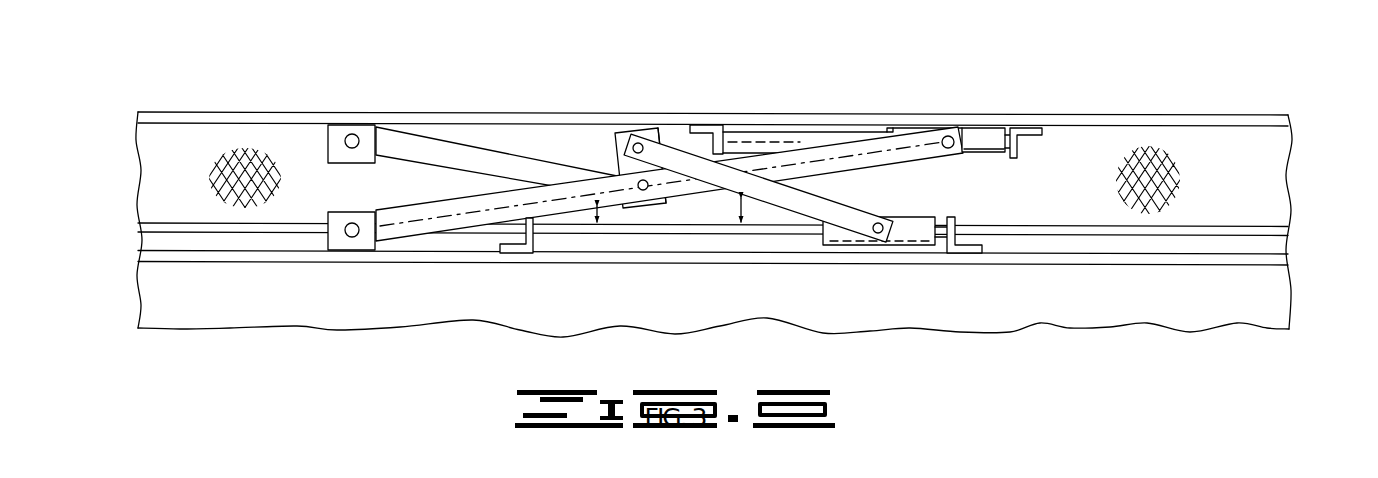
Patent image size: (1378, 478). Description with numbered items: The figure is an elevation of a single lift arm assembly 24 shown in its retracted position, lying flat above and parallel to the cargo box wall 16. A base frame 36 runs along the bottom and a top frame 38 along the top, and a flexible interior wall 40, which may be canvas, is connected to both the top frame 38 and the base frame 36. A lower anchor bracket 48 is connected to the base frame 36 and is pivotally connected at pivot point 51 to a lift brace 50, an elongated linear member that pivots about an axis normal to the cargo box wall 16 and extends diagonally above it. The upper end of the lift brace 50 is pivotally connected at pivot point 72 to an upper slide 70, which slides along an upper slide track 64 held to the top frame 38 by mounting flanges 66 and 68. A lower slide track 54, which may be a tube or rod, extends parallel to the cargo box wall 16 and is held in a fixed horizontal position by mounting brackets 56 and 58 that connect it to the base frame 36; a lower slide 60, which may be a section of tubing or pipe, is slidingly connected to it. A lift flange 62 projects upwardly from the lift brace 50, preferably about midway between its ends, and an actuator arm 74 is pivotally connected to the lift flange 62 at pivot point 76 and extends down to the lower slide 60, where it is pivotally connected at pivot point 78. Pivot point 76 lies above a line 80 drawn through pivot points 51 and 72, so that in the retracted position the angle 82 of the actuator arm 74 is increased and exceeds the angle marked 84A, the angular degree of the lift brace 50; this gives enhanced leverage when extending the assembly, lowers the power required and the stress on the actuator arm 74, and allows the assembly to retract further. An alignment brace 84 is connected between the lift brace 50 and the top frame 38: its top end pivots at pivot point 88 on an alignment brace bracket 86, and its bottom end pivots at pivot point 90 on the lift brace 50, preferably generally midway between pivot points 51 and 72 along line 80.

The cargo box wall 16 is at (1266, 300).
The lift arm assembly 24 is at (432, 298).
The base frame 36 is at (1262, 258).
The top frame 38 is at (207, 113).
The flexible interior wall 40 is at (170, 165).
The lower anchor bracket 48 is at (360, 243).
The lift brace 50 is at (808, 155).
The pivot point 51 is at (348, 232).
The lower slide track 54 is at (620, 235).
The mounting bracket 56 is at (972, 253).
The mounting bracket 58 is at (518, 250).
The lower slide 60 is at (920, 234).
The lift flange 62 is at (615, 133).
The upper slide track 64 is at (740, 130).
The mounting flange 66 is at (702, 127).
The mounting flange 68 is at (1032, 128).
The upper slide 70 is at (978, 133).
The pivot point 72 is at (953, 136).
The actuator arm 74 is at (667, 146).
The pivot point 76 is at (637, 142).
The pivot point 78 is at (878, 236).
The line 80 is at (903, 145).
The angle 82 is at (742, 199).
The alignment brace 84 is at (453, 147).
The arm clearance gap 84A is at (592, 213).
The alignment brace bracket 86 is at (337, 130).
The pivot point 88 is at (355, 135).
The pivot point 90 is at (642, 190).